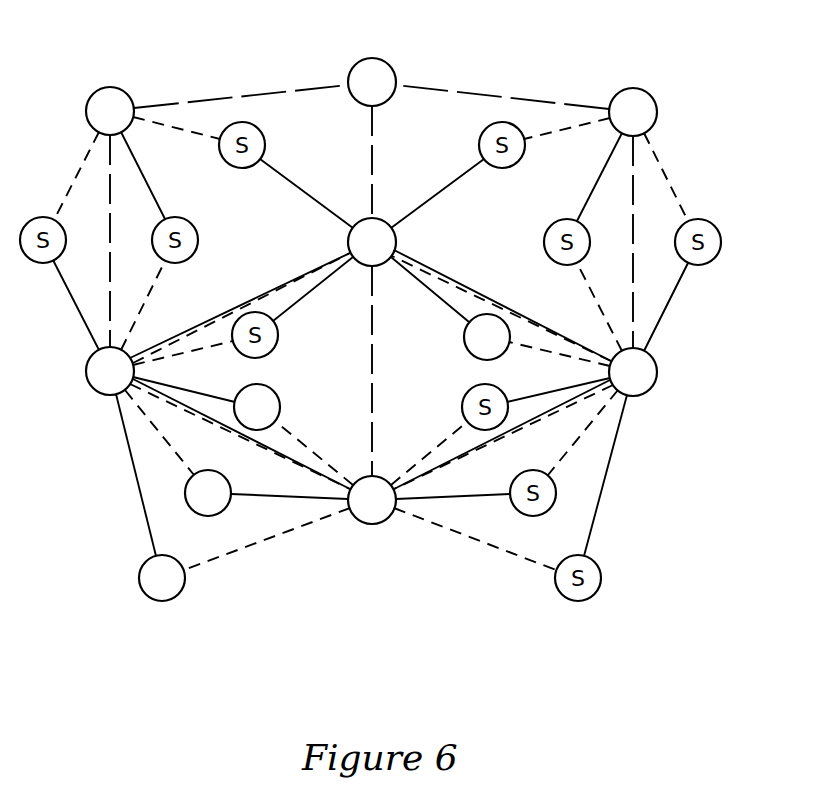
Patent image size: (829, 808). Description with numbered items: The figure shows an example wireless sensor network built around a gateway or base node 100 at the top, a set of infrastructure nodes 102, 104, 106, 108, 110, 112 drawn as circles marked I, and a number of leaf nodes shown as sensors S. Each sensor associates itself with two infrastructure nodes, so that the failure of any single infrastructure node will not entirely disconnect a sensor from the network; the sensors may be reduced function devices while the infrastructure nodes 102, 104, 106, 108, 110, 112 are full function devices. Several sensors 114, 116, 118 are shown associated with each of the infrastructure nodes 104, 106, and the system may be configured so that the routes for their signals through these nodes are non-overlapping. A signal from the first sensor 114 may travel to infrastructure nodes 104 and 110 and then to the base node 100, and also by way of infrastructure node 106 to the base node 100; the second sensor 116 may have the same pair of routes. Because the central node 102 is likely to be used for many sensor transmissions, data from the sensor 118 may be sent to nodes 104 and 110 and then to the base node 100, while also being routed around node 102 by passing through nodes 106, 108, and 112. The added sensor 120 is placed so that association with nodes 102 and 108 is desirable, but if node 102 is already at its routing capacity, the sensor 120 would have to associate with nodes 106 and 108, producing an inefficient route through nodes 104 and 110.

The base node 100 is at (389, 61).
The infrastructure node 102 is at (396, 240).
The infrastructure node 104 is at (89, 382).
The infrastructure node 106 is at (372, 524).
The infrastructure node 108 is at (655, 383).
The infrastructure node 110 is at (96, 89).
The infrastructure node 112 is at (650, 93).
The first sensor 114 is at (145, 592).
The second sensor 116 is at (213, 515).
The sensor 118 is at (272, 389).
The sensor 120 is at (469, 353).